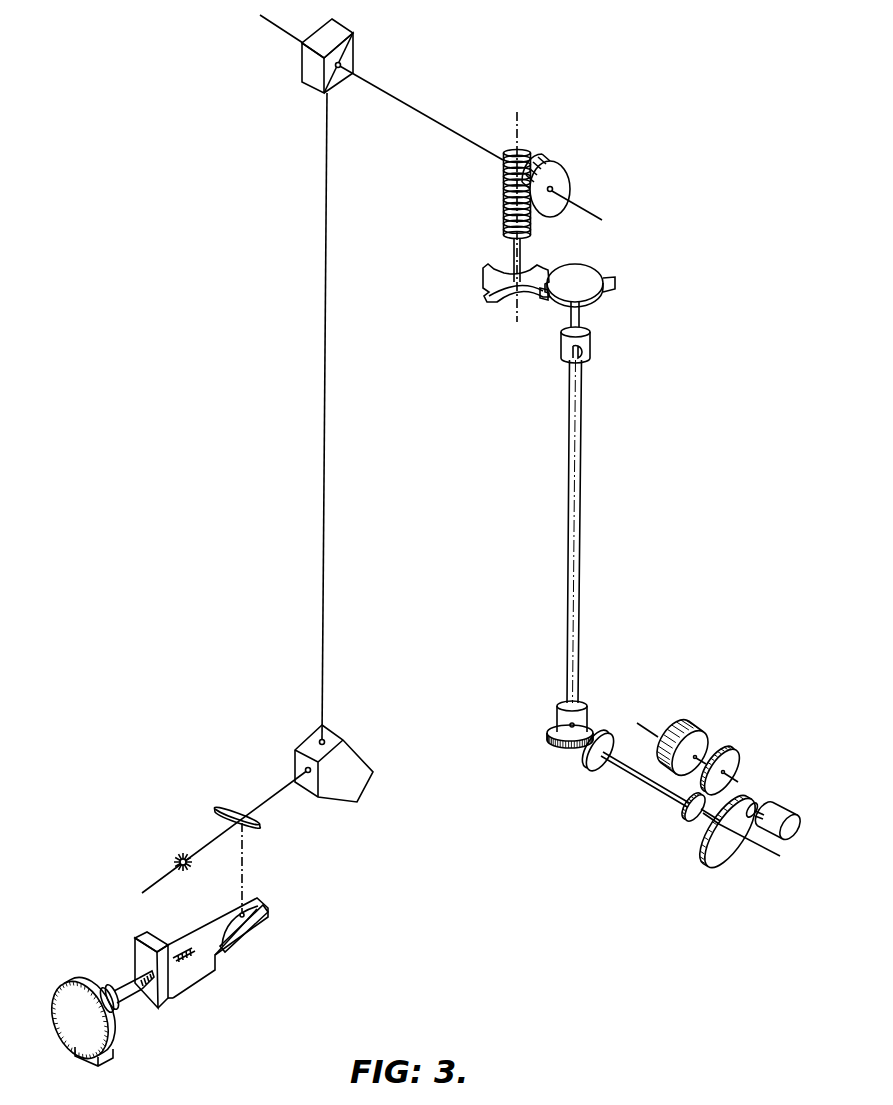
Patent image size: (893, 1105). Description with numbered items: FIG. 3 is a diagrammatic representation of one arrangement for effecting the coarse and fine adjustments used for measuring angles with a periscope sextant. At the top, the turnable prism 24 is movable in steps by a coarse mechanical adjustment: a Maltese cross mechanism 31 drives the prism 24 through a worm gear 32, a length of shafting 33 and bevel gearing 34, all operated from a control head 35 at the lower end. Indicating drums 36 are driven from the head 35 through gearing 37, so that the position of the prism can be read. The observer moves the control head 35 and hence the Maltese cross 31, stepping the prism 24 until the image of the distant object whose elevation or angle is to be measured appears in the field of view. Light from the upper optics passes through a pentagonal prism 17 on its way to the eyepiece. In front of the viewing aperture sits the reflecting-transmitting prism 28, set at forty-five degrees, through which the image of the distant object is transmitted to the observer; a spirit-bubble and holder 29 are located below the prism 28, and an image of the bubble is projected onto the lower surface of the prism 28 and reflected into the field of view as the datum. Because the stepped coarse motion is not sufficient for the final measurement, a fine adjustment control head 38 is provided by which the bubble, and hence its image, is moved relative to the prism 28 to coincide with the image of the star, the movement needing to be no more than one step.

The turnable prism 24 is at (347, 28).
The worm gear 32 is at (505, 207).
The Maltese cross mechanism 31 is at (541, 300).
The shafting 33 is at (576, 469).
The bevel gearing 34 is at (577, 755).
The indicating drums 36 is at (700, 728).
The gearing 37 is at (690, 803).
The control head 35 is at (732, 847).
The pentagonal prism 17 is at (357, 780).
The reflecting-transmitting prism 28 is at (258, 820).
The spirit-bubble and holder 29 is at (247, 923).
The fine adjustment control head 38 is at (105, 1042).